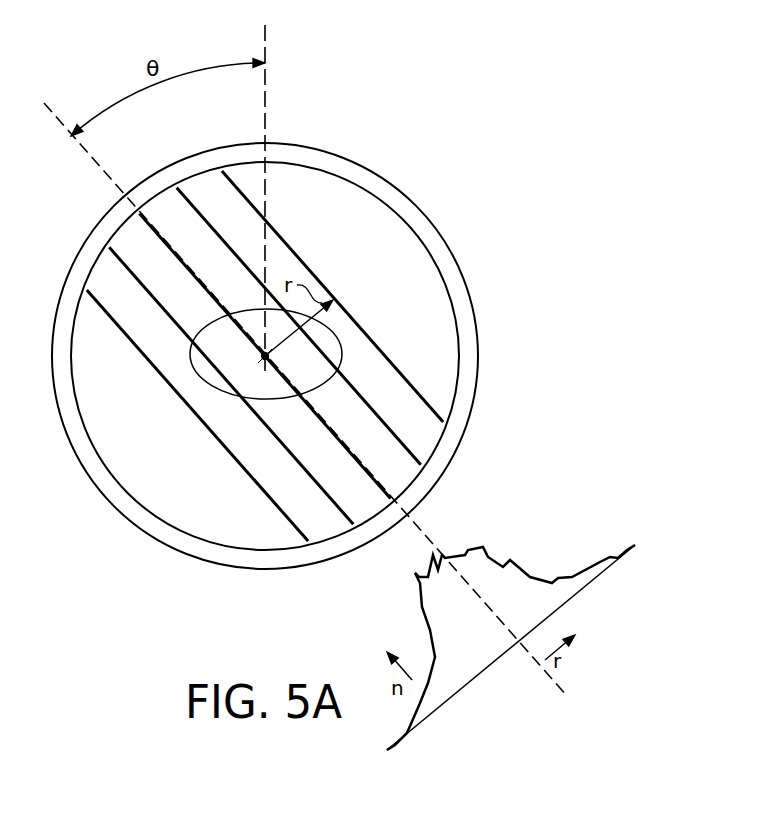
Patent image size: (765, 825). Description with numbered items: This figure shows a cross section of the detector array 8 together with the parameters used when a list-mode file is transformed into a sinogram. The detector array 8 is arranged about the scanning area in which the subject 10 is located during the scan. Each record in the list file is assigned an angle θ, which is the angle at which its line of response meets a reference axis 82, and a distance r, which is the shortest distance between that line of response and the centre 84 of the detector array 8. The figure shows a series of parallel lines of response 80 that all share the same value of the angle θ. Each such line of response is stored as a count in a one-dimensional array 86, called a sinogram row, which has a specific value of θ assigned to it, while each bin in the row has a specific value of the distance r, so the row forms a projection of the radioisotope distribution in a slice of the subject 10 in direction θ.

The detector array 8 is at (377, 175).
The subject 10 is at (207, 386).
The parallel lines / scan pattern 80 is at (394, 363).
The reference axis 82 is at (265, 43).
The centre 84 is at (262, 356).
The one-dimensional array 86 is at (615, 558).